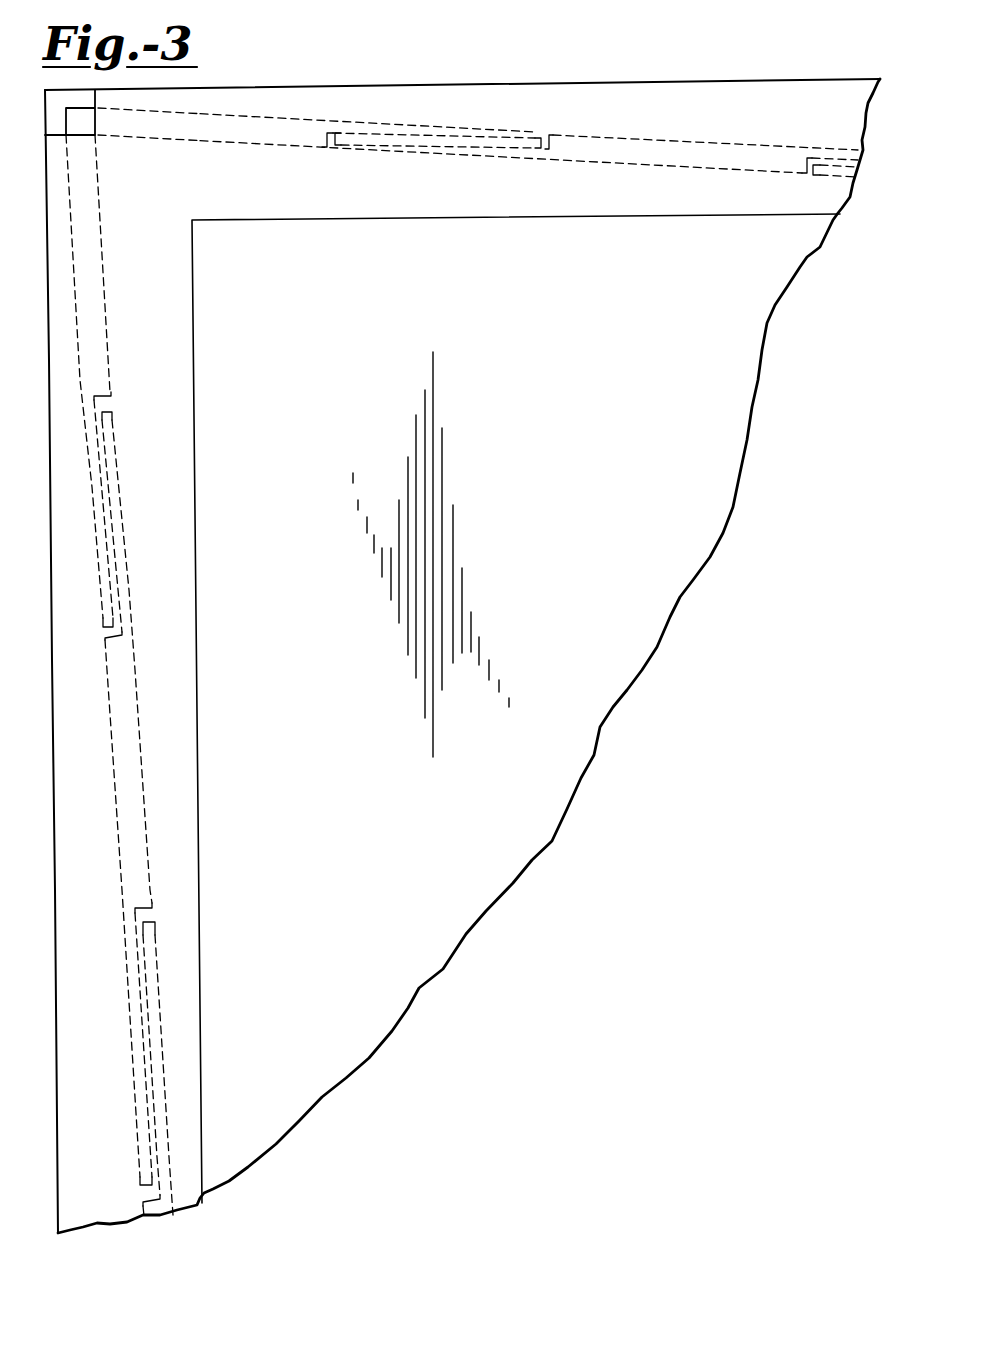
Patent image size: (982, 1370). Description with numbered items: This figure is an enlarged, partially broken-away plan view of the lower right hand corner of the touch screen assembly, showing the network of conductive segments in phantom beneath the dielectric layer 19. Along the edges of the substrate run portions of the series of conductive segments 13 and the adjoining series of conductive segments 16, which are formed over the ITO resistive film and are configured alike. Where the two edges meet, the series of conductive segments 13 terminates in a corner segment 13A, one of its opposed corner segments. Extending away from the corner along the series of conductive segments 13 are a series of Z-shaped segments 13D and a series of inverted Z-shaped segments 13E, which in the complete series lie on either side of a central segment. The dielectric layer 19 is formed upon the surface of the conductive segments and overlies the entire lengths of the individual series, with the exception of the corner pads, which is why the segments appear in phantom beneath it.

The series of conductive segments 13 is at (662, 167).
The corner segment 13A is at (137, 135).
The Z-shaped segment 13D is at (582, 163).
The inverted Z-shaped segment 13E is at (118, 460).
The series of conductive segments 16 is at (145, 757).
The dielectric layer 19 is at (342, 220).